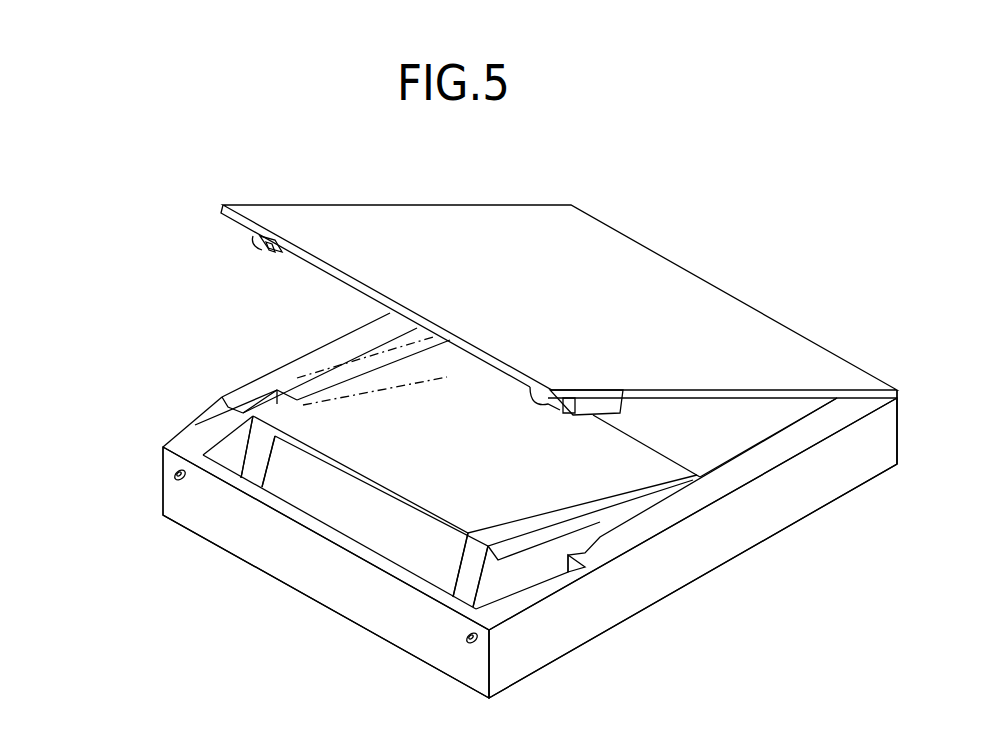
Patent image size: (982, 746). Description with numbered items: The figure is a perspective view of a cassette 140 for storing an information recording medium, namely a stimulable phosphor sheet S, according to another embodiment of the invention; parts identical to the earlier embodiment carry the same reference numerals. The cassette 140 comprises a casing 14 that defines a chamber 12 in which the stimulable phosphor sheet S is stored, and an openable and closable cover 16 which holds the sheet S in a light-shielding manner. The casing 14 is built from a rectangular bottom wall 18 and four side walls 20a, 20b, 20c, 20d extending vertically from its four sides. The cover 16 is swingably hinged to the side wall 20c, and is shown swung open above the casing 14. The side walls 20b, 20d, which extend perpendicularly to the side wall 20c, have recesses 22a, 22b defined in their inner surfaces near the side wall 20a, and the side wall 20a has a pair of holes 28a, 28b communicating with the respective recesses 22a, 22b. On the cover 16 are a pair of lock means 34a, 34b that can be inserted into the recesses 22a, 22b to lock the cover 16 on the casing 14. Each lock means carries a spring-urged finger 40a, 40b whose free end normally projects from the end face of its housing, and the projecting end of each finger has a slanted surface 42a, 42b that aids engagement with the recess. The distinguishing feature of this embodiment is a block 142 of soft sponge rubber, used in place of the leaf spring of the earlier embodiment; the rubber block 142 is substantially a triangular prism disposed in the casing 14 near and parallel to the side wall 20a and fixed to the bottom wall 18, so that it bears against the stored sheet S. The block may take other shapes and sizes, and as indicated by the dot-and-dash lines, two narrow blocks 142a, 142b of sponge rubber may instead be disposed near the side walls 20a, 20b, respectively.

The cassette assembly 140 is at (667, 208).
The chamber 12 is at (710, 443).
The casing 14 is at (698, 577).
The cover 16 is at (713, 307).
The bottom wall 18 is at (743, 420).
The side wall 20a is at (305, 570).
The side wall 20b is at (803, 504).
The side wall 20c is at (900, 433).
The side wall 20d is at (322, 357).
The recess 22a is at (527, 587).
The recess 22b is at (230, 427).
The hole 28a is at (468, 647).
The hole 28b is at (177, 484).
The lock means 34a is at (607, 410).
The lock means 34b is at (274, 236).
The finger 40a is at (565, 397).
The finger 40b is at (268, 250).
The slanted surface 42a is at (547, 398).
The slanted surface 42b is at (262, 247).
The block of soft sponge rubber 142 is at (413, 553).
The narrow block of sponge rubber 142a is at (463, 592).
The narrow block of sponge rubber 142b is at (247, 478).
The stimulable phosphor sheet S is at (290, 383).